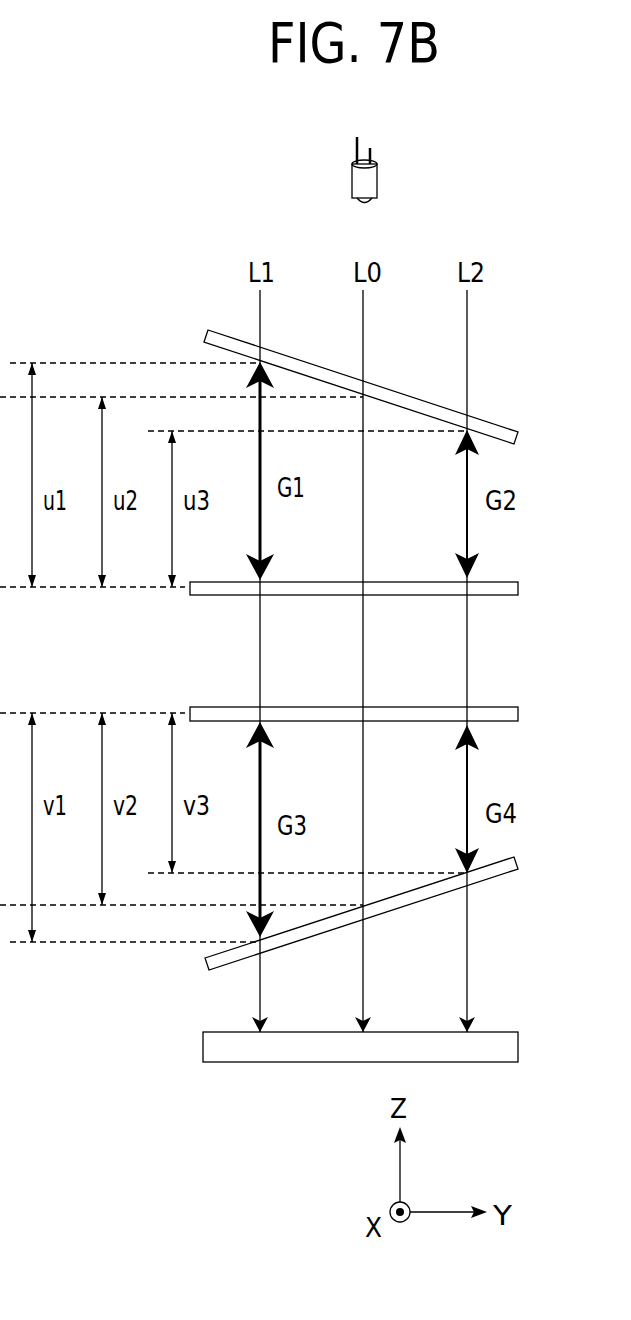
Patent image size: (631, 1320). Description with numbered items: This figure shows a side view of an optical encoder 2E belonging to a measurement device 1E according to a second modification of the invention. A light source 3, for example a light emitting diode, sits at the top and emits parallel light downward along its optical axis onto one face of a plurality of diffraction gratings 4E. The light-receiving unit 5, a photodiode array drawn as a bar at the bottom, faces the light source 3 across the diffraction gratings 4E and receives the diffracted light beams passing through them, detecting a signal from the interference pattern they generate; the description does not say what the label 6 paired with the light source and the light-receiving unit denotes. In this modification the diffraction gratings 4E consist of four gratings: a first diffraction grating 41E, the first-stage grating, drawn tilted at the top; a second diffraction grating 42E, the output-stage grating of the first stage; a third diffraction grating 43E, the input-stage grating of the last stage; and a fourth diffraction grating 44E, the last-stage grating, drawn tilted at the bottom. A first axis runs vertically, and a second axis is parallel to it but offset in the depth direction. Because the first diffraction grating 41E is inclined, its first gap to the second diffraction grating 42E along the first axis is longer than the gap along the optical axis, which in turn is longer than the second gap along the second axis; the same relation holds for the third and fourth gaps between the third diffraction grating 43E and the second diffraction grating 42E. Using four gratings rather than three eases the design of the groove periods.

The measurement device 1E is at (216, 151).
The optical encoder 2E is at (214, 244).
The light source 3 is at (377, 183).
The optical head unit 6 is at (360, 641).
The diffraction gratings 4E is at (300, 644).
The first diffraction grating 41E is at (210, 330).
The second diffraction grating 42E is at (192, 596).
The third diffraction grating 43E is at (192, 707).
The fourth diffraction grating 44E is at (206, 968).
The light-receiving unit 5 is at (448, 1062).